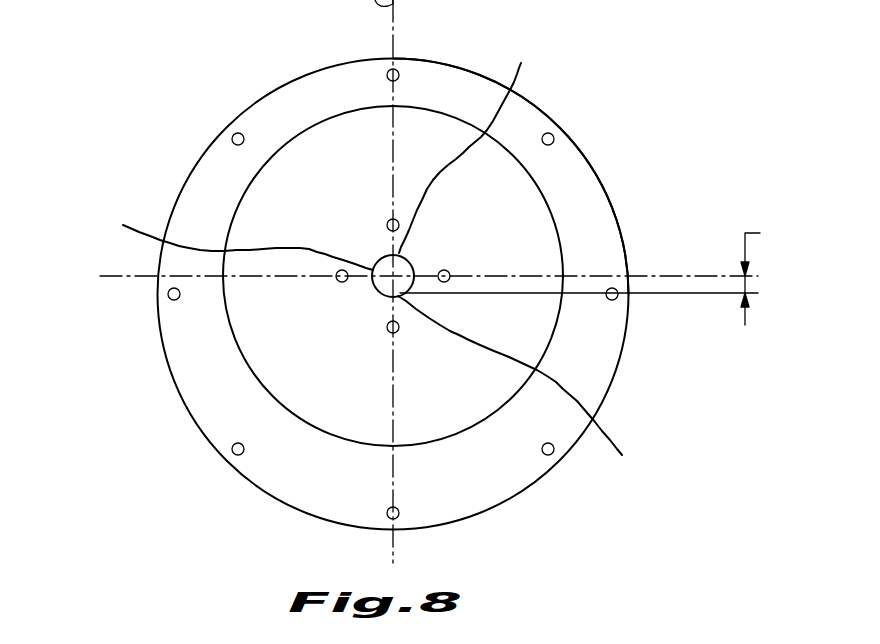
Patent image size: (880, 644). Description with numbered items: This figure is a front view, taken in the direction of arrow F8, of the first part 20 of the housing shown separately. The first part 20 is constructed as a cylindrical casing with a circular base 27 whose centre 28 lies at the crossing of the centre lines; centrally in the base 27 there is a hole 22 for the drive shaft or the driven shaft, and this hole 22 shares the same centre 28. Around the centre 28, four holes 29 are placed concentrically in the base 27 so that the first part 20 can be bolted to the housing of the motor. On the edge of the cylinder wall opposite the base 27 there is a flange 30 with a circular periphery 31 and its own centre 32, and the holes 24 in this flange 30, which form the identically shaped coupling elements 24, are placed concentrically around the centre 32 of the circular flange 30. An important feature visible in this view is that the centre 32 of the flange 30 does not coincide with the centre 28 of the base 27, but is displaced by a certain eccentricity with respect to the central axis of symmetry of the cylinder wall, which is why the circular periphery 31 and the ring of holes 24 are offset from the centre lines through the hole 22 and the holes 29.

The first part of the housing 20 is at (145, 102).
The hole 22 is at (471, 144).
The holes 24 is at (236, 133).
The circular base 27 is at (495, 197).
The centre 28 is at (228, 235).
The holes 29 is at (389, 218).
The flange 30 is at (467, 488).
The circular periphery 31 is at (625, 348).
The centre 32 is at (527, 389).
The arrow F8 is at (643, 403).